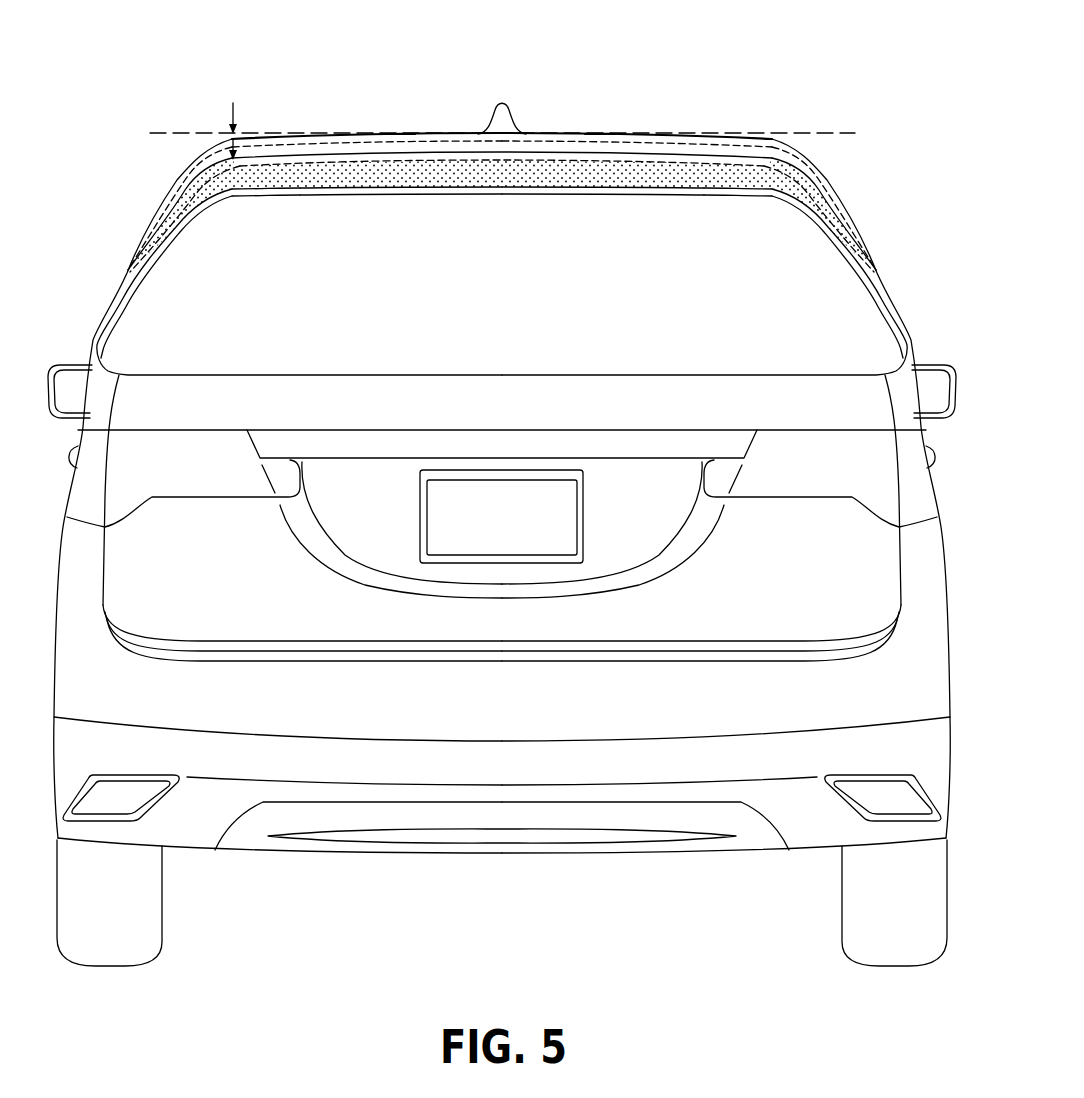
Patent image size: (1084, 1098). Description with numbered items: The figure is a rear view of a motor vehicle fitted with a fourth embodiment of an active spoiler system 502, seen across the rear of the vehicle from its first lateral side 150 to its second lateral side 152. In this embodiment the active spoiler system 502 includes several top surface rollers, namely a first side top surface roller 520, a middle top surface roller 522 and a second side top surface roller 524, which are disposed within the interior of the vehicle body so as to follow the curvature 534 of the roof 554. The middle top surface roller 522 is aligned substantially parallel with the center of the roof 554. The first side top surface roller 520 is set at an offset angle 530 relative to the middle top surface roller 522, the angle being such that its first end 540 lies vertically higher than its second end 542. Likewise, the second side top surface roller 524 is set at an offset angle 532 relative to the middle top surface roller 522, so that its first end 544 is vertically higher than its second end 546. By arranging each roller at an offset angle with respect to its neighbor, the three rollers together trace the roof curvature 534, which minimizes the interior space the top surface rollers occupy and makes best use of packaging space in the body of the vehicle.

The first lateral side 150 is at (62, 282).
The second lateral side 152 is at (942, 282).
The active spoiler system 502 is at (820, 100).
The first side top surface roller 520 is at (300, 146).
The middle top surface roller 522 is at (543, 130).
The second side top surface roller 524 is at (701, 146).
The offset angle 530 is at (399, 124).
The offset angle 532 is at (601, 124).
The curvature 534 is at (232, 139).
The first end 540 is at (377, 188).
The second end 542 is at (232, 184).
The first end 544 is at (627, 190).
The second end 546 is at (777, 186).
The roof 554 is at (737, 136).